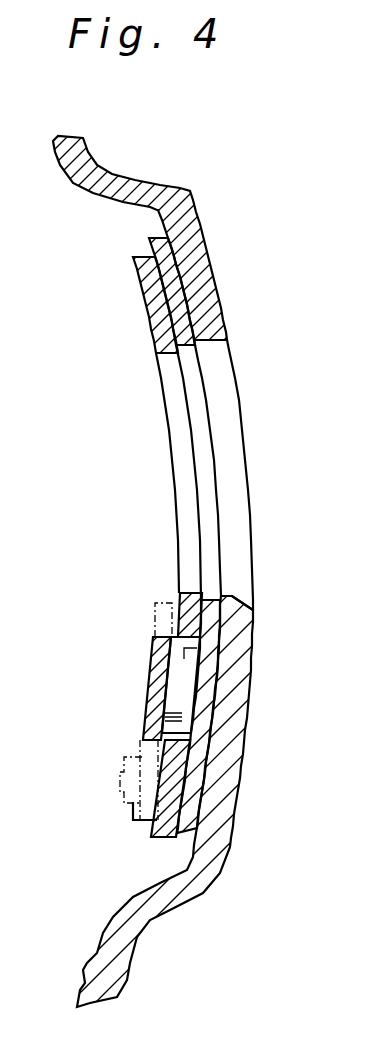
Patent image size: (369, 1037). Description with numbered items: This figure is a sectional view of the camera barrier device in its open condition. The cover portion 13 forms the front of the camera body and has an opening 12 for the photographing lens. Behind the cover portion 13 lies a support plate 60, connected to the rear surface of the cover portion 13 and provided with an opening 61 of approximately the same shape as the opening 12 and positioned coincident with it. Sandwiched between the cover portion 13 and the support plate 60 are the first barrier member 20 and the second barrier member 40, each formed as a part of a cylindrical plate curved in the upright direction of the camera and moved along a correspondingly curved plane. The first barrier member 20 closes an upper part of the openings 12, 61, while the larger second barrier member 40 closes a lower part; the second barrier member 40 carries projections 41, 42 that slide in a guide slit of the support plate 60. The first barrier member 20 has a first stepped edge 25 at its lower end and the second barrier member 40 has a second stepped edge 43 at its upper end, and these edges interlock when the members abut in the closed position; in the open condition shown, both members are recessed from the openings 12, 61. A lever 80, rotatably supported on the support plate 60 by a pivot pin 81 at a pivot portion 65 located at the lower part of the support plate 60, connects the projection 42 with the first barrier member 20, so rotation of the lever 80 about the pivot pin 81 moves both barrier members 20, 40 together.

The opening 12 is at (231, 401).
The cover portion 13 is at (192, 198).
The first barrier member 20 is at (177, 290).
The first stepped edge 25 is at (176, 333).
The second barrier member 40 is at (229, 690).
The projection 41 is at (153, 617).
The projection 42 is at (123, 782).
The second stepped edge 43 is at (208, 594).
The support plate 60 is at (138, 286).
The opening 61 is at (168, 403).
The pivot portion 65 is at (196, 745).
The lever 80 is at (150, 652).
The pivot pin 81 is at (176, 690).